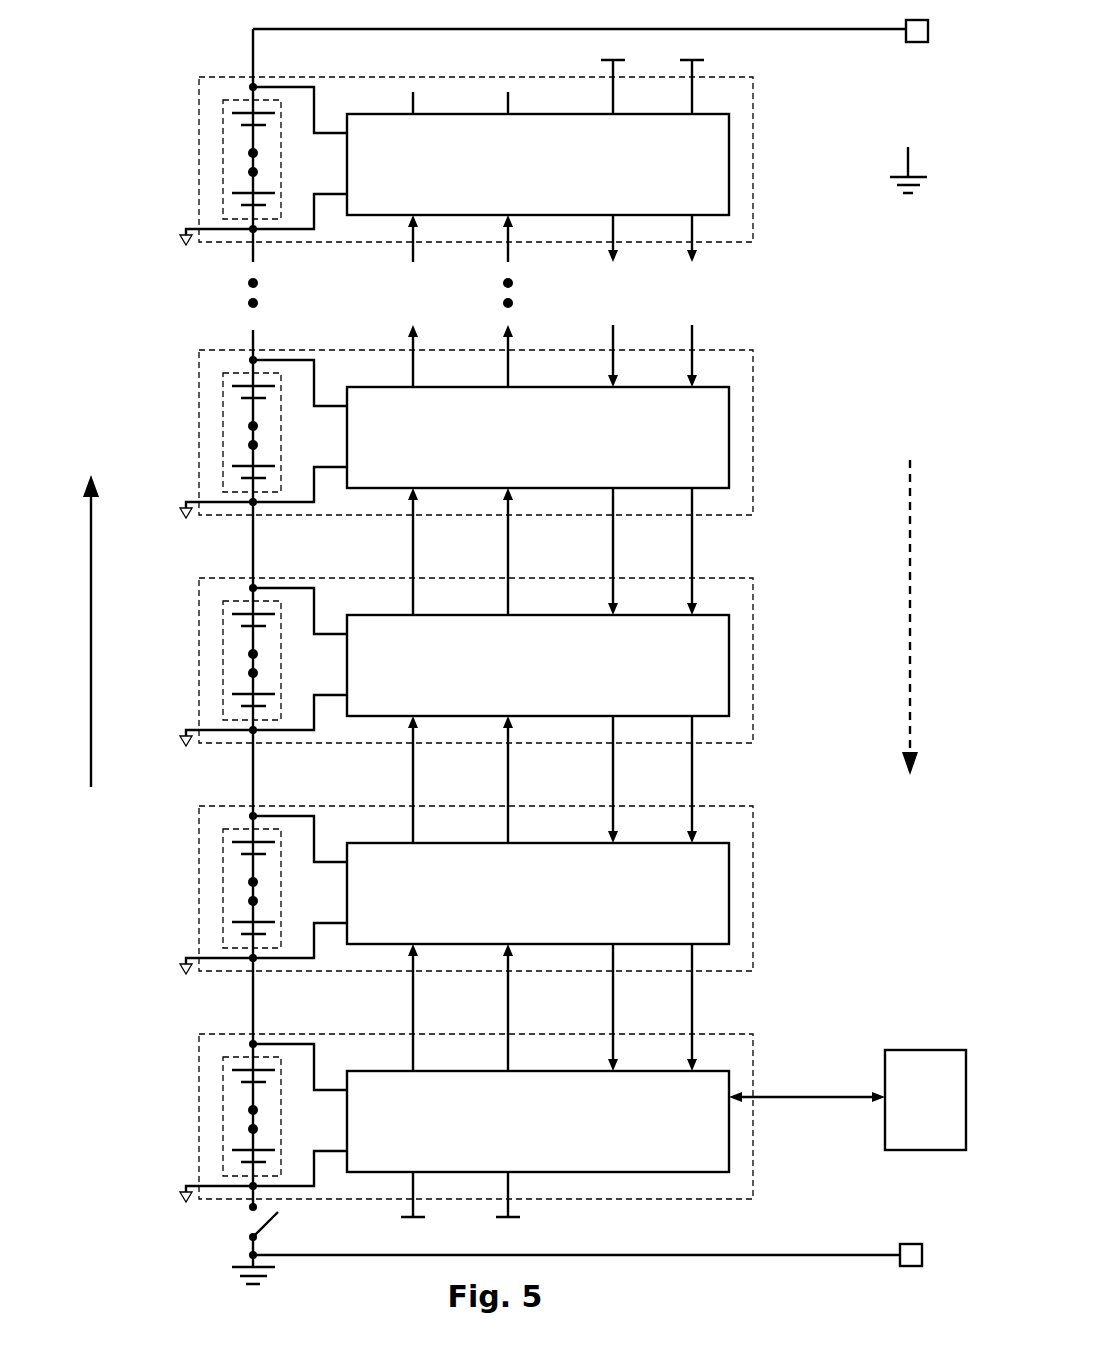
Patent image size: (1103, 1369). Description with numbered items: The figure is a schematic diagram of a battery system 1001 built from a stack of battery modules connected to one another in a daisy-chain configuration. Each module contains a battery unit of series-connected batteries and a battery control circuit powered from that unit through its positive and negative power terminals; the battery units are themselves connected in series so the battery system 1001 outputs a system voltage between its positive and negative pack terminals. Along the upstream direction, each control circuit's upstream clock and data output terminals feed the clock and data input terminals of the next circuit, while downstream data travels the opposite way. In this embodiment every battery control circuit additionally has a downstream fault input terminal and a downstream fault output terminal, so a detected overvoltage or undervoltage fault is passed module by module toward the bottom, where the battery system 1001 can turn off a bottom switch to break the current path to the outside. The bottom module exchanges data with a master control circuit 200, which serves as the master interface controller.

The battery system 1001 is at (172, 87).
The master control circuit 200 is at (925, 1100).